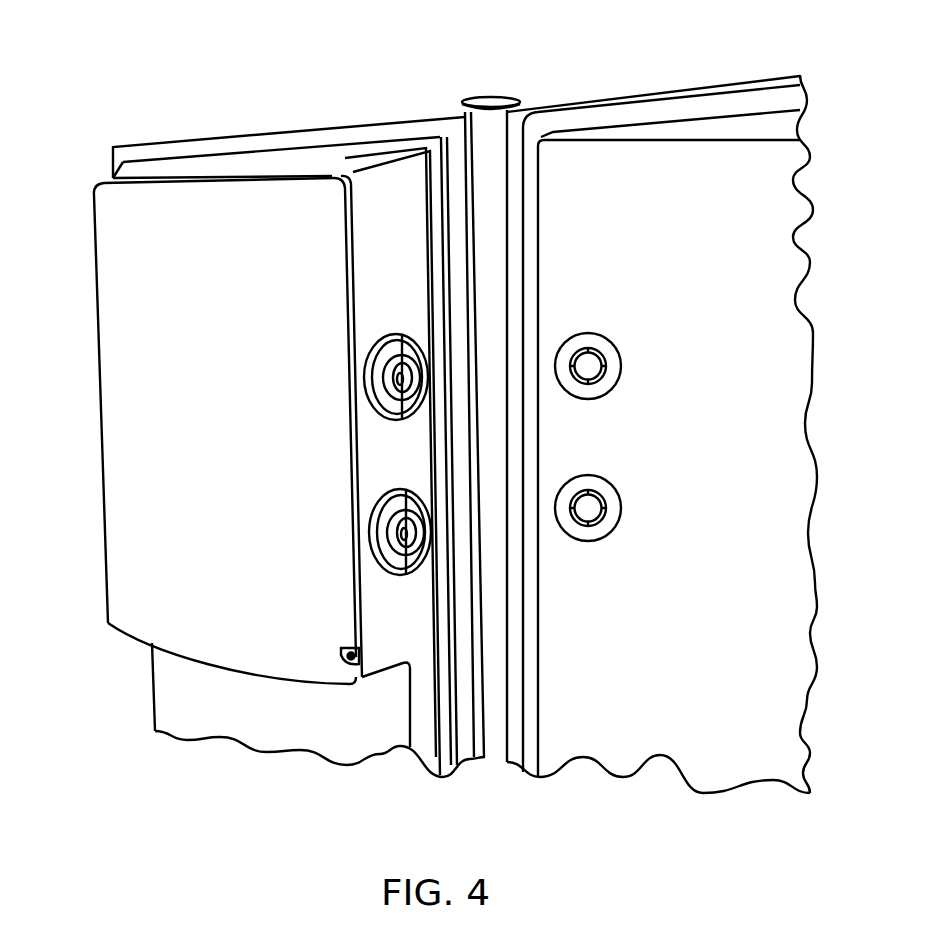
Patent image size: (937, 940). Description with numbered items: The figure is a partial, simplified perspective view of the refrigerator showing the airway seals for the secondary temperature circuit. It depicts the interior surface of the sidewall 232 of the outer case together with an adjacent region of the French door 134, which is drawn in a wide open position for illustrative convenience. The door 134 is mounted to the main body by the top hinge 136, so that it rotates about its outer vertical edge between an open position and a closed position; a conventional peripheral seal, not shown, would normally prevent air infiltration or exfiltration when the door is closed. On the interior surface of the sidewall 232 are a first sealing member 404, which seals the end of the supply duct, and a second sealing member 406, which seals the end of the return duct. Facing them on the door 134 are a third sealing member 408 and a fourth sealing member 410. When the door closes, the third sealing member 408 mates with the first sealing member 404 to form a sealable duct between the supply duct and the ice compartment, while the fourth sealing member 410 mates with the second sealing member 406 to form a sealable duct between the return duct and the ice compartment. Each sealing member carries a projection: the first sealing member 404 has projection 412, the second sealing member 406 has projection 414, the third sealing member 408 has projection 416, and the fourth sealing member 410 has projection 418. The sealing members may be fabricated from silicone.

The French door 134 is at (125, 145).
The top hinge 136 is at (505, 97).
The sidewall 232 is at (641, 214).
The first sealing member 404 is at (603, 485).
The second sealing member 406 is at (609, 338).
The third sealing member 408 is at (378, 502).
The fourth sealing member 410 is at (375, 343).
The projection 412 is at (603, 510).
The projection 414 is at (603, 365).
The projection 416 is at (388, 538).
The projection 418 is at (388, 390).